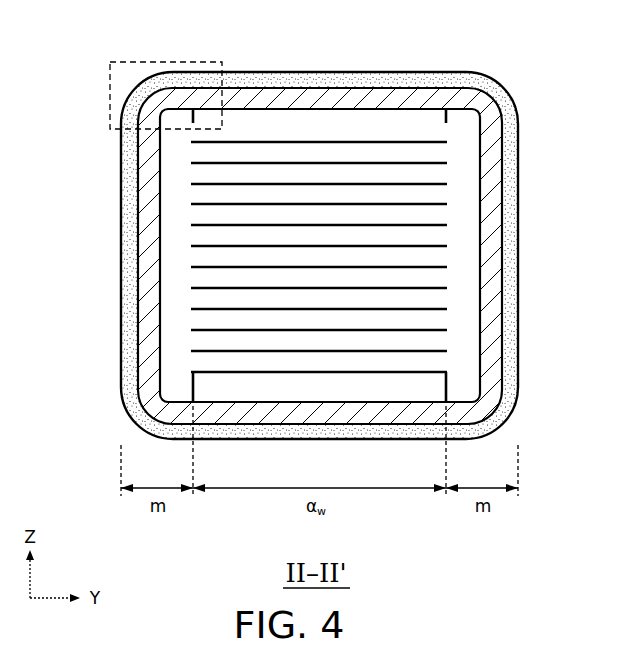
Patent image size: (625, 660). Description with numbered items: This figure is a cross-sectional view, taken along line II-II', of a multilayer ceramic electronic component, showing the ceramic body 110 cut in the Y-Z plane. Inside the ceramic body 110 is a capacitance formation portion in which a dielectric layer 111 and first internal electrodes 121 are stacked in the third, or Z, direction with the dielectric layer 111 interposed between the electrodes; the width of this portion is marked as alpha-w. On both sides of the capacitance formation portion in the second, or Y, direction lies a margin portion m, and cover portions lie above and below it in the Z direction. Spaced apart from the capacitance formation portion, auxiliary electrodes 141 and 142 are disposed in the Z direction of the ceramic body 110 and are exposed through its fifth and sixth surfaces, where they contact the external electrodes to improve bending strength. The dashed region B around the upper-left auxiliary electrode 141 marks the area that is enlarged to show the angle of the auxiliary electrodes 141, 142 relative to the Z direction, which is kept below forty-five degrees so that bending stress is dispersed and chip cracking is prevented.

The ceramic body 110 is at (327, 108).
The dielectric layer 111 is at (433, 213).
The first internal electrode 121 is at (423, 247).
The auxiliary electrode 141 is at (193, 110).
The auxiliary electrode 142 is at (193, 400).
The region B is at (109, 100).